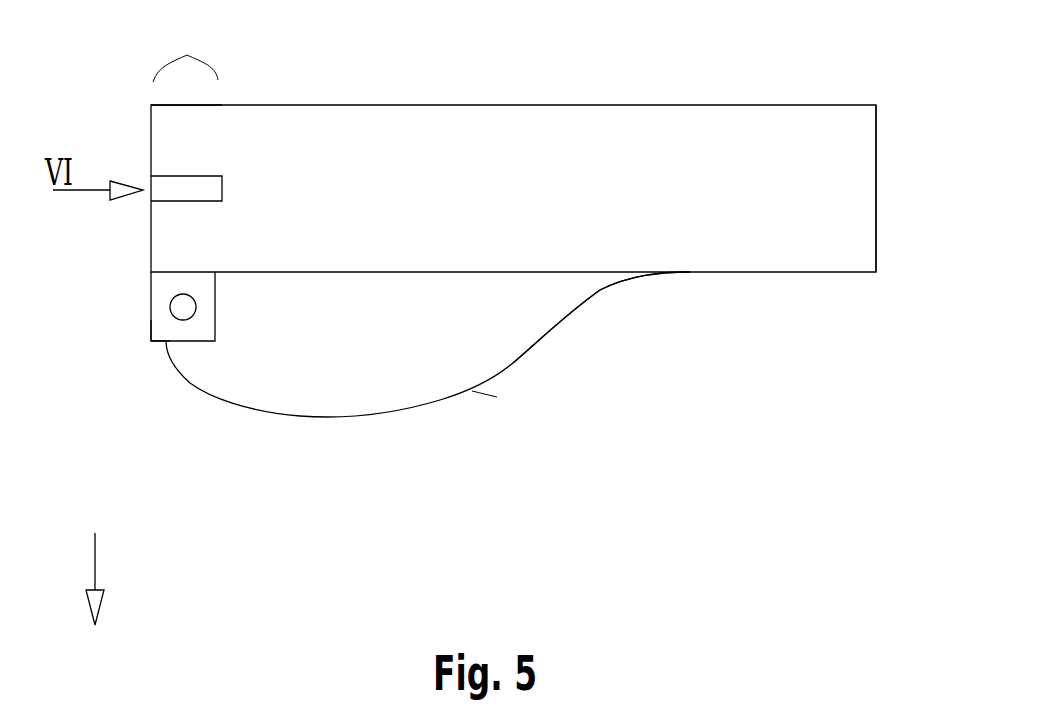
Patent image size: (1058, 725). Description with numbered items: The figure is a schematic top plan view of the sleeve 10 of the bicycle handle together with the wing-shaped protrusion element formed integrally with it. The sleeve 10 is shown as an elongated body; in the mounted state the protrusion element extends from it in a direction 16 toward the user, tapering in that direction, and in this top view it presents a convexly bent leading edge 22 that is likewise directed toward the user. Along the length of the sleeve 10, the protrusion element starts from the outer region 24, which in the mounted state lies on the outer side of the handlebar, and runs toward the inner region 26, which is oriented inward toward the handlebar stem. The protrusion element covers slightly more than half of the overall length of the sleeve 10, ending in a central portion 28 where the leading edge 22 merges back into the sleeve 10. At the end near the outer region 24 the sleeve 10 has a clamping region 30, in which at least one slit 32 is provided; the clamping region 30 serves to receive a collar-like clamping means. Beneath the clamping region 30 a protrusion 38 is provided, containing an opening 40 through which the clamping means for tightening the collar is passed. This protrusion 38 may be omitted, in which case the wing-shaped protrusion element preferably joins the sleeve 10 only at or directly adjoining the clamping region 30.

The sleeve 10 is at (587, 97).
The direction toward the user 16 is at (97, 562).
The convexly bent leading edge 22 is at (471, 391).
The outer region 24 is at (148, 358).
The inner region 26 is at (883, 280).
The central portion 28 is at (610, 310).
The clamping region 30 is at (186, 58).
The slit 32 is at (158, 188).
The protrusion 38 is at (158, 292).
The opening 40 is at (183, 307).